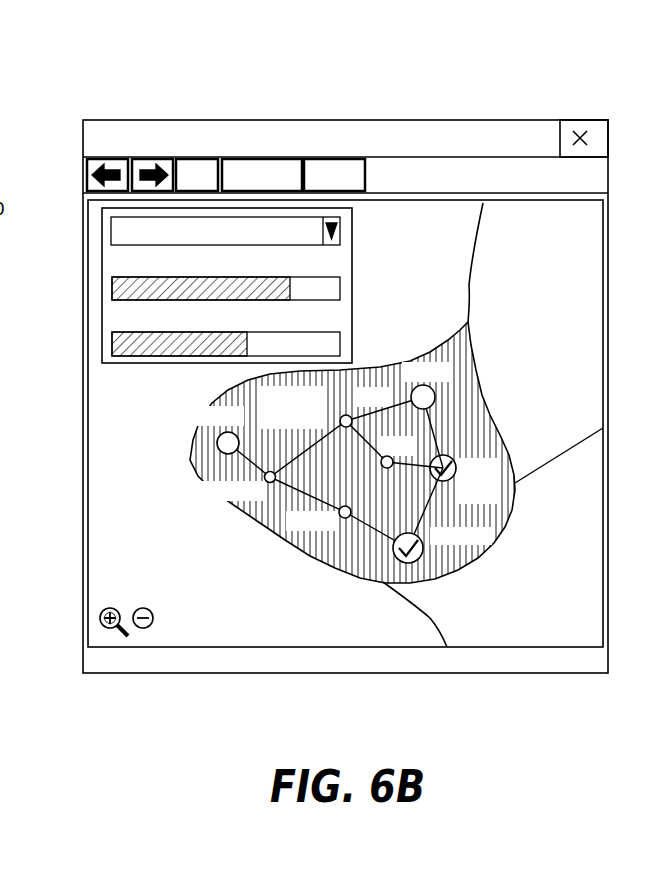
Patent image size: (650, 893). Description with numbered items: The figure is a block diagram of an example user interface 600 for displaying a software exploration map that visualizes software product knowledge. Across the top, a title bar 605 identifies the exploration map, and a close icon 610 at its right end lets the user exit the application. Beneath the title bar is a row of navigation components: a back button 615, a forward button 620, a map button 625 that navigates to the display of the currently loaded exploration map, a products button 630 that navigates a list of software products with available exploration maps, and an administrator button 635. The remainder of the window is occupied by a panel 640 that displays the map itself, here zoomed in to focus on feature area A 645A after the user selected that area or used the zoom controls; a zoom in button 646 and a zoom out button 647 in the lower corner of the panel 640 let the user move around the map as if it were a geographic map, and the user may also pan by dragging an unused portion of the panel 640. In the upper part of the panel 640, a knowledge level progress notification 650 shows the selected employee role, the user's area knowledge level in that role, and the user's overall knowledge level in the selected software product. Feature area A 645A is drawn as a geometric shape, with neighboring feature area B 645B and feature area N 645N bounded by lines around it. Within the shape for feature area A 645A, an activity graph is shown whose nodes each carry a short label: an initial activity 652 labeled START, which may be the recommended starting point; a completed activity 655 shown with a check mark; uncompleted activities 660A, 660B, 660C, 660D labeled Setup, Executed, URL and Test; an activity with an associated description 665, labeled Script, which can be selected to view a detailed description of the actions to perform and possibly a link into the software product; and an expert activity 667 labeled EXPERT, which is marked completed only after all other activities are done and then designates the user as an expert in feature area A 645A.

The user interface 600 is at (124, 48).
The title bar 605 is at (335, 118).
The close icon 610 is at (575, 125).
The back button 615 is at (98, 157).
The forward button 620 is at (152, 157).
The map button 625 is at (212, 162).
The products button 630 is at (248, 162).
The administrator button 635 is at (357, 193).
The panel 640 is at (88, 290).
The feature area A 645A is at (462, 348).
The feature area B 645B is at (475, 274).
The feature area N 645N is at (430, 606).
The knowledge level progress notification 650 is at (102, 265).
The initial activity 652 is at (435, 562).
The completed activity 655 is at (457, 456).
The uncompleted activity 660A is at (345, 522).
The uncompleted activity 660B is at (270, 487).
The uncompleted activity 660C is at (383, 471).
The uncompleted activity 660D is at (348, 414).
The activity with an associated description 665 is at (436, 392).
The expert activity 667 is at (217, 442).
The zoom in button 646 is at (108, 628).
The zoom out button 647 is at (143, 628).